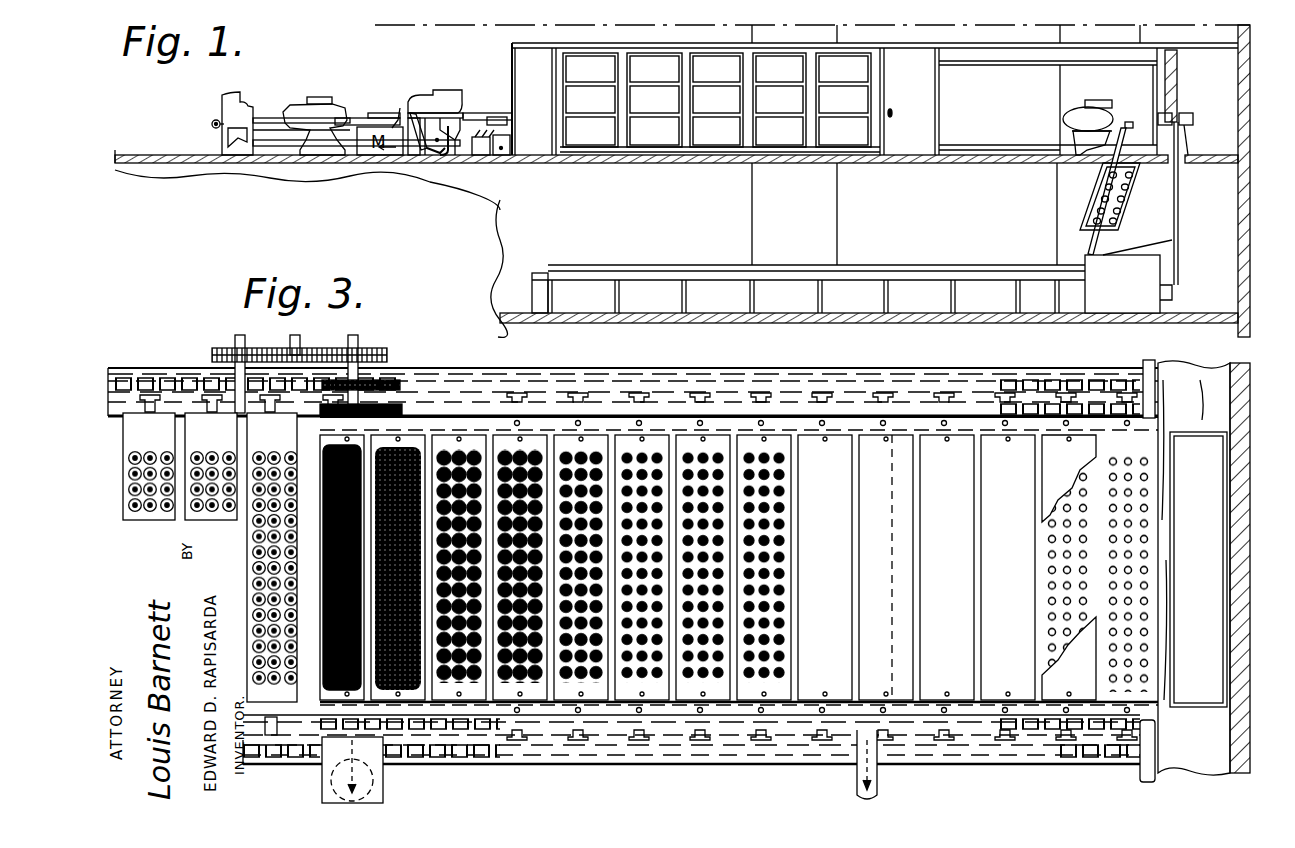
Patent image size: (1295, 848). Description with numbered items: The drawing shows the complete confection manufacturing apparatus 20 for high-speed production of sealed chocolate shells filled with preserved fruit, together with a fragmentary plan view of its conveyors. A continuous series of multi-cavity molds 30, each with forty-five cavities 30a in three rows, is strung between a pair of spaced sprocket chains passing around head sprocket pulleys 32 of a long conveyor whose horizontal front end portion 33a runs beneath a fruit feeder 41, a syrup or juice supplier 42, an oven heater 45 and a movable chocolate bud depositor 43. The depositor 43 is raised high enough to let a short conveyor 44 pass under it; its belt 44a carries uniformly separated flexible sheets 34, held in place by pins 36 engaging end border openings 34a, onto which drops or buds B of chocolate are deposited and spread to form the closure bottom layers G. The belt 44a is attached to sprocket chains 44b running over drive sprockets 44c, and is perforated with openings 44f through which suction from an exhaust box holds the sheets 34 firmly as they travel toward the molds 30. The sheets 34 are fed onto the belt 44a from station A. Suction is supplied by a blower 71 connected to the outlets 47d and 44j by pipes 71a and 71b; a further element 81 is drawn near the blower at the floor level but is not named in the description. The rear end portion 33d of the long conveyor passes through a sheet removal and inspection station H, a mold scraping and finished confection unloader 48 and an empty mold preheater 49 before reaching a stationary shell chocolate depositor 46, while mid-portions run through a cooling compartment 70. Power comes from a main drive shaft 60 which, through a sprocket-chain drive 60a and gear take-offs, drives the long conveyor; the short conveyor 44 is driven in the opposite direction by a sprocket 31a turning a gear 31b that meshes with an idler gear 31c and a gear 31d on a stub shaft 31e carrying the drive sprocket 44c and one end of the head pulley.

In FIG. 1, the confection manufacturing apparatus 20 is at (486, 210).
In FIG. 3, the mold 30 is at (253, 658).
In FIG. 3, the mold cavities 30a is at (255, 590).
In FIG. 3, the sprocket 31a is at (210, 382).
In FIG. 3, the gear 31b is at (237, 348).
In FIG. 3, the idler gear 31c is at (290, 352).
In FIG. 3, the gear 31d is at (348, 350).
In FIG. 3, the stub shaft 31e is at (375, 375).
In FIG. 1, the head sprocket pulleys 32 is at (212, 124).
In FIG. 1, the front end portion 33a is at (350, 117).
In FIG. 1, the rear end portion 33d is at (1130, 120).
In FIG. 3, the flexible sheets 34 is at (975, 435).
In FIG. 3, the end border openings 34a is at (1200, 440).
In FIG. 3, the pins 36 is at (1010, 440).
In FIG. 1, the fruit feeder 41 is at (233, 104).
In FIG. 1, the syrup or juice supplier 42 is at (318, 97).
In FIG. 1, the movable chocolate bud depositor 43 is at (437, 100).
In FIG. 1, the short conveyor 44 is at (466, 112).
In FIG. 3, the short conveyor 44 is at (660, 745).
In FIG. 3, the belt 44a is at (907, 430).
In FIG. 3, the sprocket chain 44b is at (1100, 415).
In FIG. 3, the drive sprockets 44c is at (490, 415).
In FIG. 3, the openings 44f is at (1150, 525).
In FIG. 3, the outlet 44j is at (388, 792).
In FIG. 1, the oven heater 45 is at (378, 112).
In FIG. 1, the stationary shell chocolate depositor 46 is at (1100, 95).
In FIG. 3, the outlet 47d is at (858, 773).
In FIG. 1, the mold scraping and finished confection unloader 48 is at (1166, 258).
In FIG. 1, the empty mold preheater 49 is at (1086, 174).
In FIG. 1, the main drive shaft 60 is at (275, 150).
In FIG. 1, the sprocket-chain drive 60a is at (470, 160).
In FIG. 1, the cooling compartment 70 is at (714, 70).
In FIG. 1, the blower or fan 71 is at (420, 150).
In FIG. 1, the pipe 71a is at (455, 160).
In FIG. 1, the pipe 71b is at (400, 108).
In FIG. 1, the actuator 81 is at (500, 158).
In FIG. 1, the station A is at (500, 112).
In FIG. 3, the station A is at (1212, 470).
In FIG. 3, the chocolate buds B is at (772, 460).
In FIG. 3, the closure bottom chocolate layers G is at (350, 408).
In FIG. 1, the sheet removal and inspection station H is at (1190, 108).